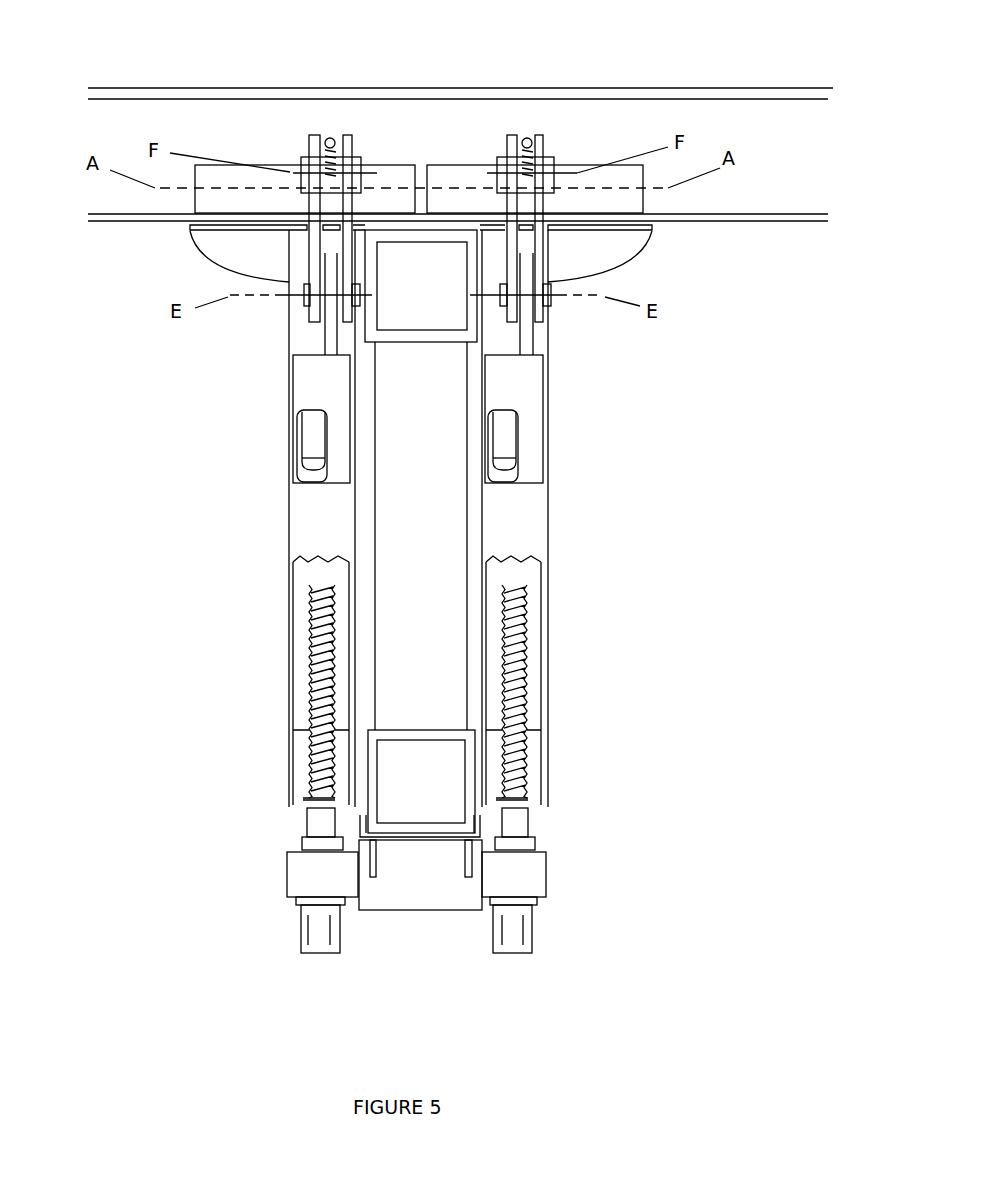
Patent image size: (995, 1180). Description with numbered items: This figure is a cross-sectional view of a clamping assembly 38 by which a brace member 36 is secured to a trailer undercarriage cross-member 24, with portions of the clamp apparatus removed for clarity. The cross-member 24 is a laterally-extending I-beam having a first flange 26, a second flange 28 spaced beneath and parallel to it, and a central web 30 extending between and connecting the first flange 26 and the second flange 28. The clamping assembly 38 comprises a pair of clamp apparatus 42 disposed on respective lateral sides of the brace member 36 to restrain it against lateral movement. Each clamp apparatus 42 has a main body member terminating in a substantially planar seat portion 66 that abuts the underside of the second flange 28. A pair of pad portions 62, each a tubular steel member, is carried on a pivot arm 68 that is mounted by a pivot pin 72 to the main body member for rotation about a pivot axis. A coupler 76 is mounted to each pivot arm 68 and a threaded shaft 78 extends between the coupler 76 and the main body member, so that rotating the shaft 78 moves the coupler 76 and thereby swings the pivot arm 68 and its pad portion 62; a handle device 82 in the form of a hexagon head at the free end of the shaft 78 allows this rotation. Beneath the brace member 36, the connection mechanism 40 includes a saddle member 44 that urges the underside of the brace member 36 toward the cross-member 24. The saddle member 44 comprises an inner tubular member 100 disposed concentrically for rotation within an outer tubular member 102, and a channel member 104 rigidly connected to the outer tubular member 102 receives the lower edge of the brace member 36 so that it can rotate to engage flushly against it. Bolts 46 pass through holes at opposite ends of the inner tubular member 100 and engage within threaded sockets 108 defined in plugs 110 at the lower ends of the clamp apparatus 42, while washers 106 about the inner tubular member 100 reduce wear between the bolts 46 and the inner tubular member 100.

The cross-member 24 is at (157, 110).
The first flange 26 is at (780, 101).
The second flange 28 is at (780, 218).
The central web 30 is at (785, 158).
The brace member 36 is at (458, 528).
The clamping assembly 38 is at (612, 682).
The connection mechanism 40 is at (78, 895).
The clamp apparatus 42 is at (287, 587).
The saddle member 44 is at (289, 882).
The bolts 46 is at (316, 922).
The pad portion 62 is at (200, 200).
The seat portion 66 is at (200, 232).
The pivot arm 68 is at (314, 135).
The pivot pin 72 is at (306, 300).
The coupler 76 is at (301, 158).
The shaft 78 is at (330, 138).
The handle device 82 is at (305, 437).
The inner tubular member 100 is at (542, 877).
The outer tubular member 102 is at (411, 897).
The channel member 104 is at (337, 823).
The washers 106 is at (538, 903).
The threaded sockets 108 is at (302, 783).
The plug 110 is at (302, 743).